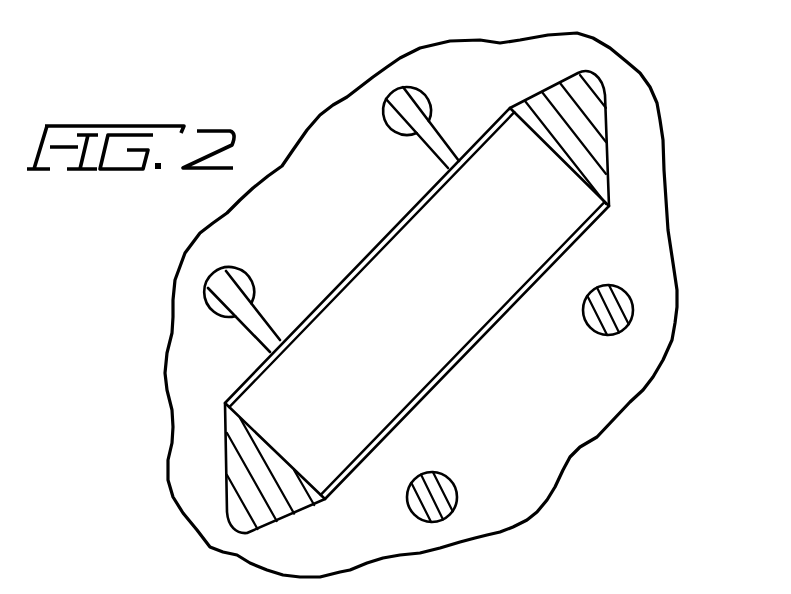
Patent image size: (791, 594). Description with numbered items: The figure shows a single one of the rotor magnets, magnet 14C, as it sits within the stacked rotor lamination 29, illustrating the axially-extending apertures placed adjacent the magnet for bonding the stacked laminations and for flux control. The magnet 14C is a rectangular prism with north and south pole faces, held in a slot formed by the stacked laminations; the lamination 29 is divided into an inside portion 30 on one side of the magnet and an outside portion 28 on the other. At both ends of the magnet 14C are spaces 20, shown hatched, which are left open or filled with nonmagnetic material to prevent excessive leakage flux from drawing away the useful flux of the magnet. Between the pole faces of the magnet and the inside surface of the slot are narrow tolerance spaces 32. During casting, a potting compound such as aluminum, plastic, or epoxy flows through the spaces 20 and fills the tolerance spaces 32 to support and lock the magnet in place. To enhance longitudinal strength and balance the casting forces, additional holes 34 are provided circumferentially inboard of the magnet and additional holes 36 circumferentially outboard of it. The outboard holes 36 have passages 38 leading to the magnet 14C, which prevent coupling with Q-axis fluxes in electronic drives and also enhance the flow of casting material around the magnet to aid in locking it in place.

The magnet 14C is at (529, 239).
The spaces 20 is at (415, 302).
The outside portion 28 is at (598, 393).
The rotor lamination 29 is at (423, 305).
The inside portion 30 is at (391, 205).
The tolerance spaces 32 is at (463, 348).
The holes 34 is at (532, 368).
The holes 36 is at (317, 202).
The passages 38 is at (356, 207).